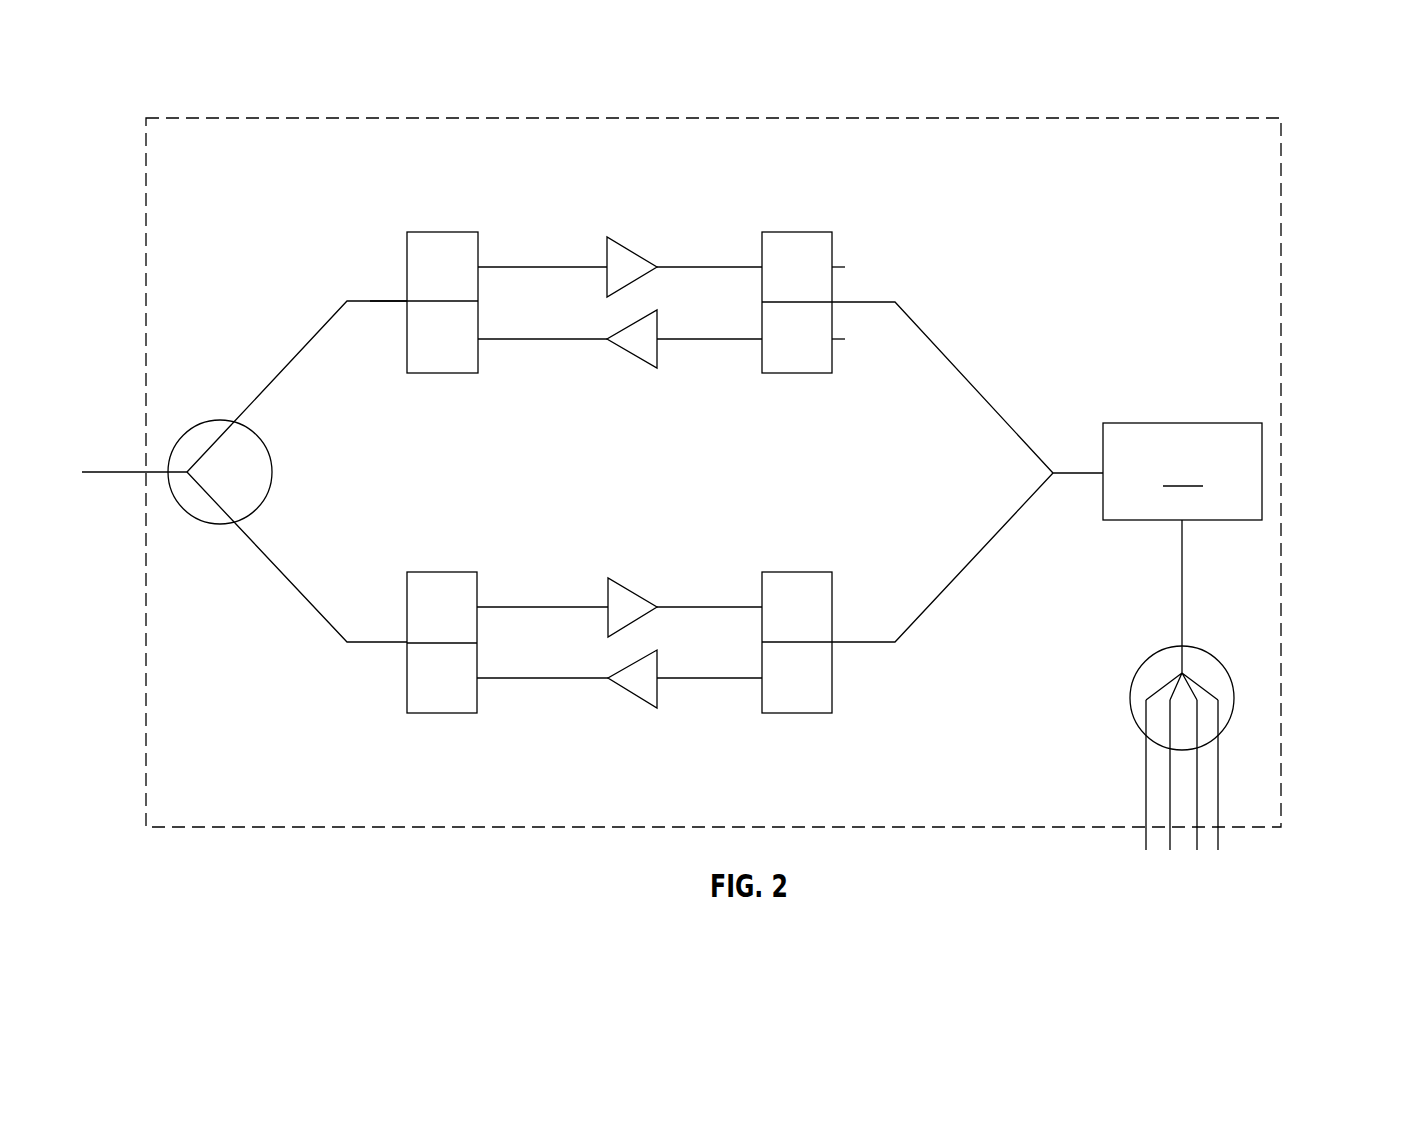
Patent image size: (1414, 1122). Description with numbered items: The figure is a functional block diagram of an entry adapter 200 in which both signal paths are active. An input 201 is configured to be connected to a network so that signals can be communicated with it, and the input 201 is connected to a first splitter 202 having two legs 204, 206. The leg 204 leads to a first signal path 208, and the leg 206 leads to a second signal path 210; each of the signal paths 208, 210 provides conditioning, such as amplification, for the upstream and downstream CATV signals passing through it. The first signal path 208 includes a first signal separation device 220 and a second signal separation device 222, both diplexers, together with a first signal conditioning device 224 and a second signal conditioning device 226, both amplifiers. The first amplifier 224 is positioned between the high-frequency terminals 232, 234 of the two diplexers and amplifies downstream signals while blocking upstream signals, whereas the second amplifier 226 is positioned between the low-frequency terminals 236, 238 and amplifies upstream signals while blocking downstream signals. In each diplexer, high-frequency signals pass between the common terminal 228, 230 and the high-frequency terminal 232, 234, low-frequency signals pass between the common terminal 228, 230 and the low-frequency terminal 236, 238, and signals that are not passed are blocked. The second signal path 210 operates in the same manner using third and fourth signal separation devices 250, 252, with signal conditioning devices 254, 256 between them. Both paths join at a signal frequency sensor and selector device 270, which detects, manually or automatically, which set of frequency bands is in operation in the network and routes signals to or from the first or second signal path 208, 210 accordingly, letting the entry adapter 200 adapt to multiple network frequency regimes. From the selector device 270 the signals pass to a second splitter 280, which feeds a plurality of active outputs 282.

The entry adapter 200 is at (1333, 83).
The input 201 is at (146, 474).
The first splitter 202 is at (222, 420).
The leg 204 is at (322, 330).
The leg 206 is at (317, 617).
The first signal path 208 is at (382, 182).
The second signal path 210 is at (380, 733).
The first signal separation device 220 is at (442, 232).
The second signal separation device 222 is at (795, 230).
The first signal conditioning device 224 is at (633, 250).
The second signal conditioning device 226 is at (630, 358).
The common terminal 228 is at (408, 300).
The common terminal 230 is at (832, 300).
The high-frequency terminal 232 is at (478, 255).
The high-frequency terminal 234 is at (832, 258).
The low-frequency terminal 236 is at (478, 330).
The low-frequency terminal 238 is at (832, 343).
The third signal separation device 250 is at (442, 572).
The fourth signal separation device 252 is at (795, 570).
The signal conditioning device 254 is at (632, 590).
The signal conditioning device 256 is at (633, 697).
The signal frequency sensor and selector device 270 is at (1182, 548).
The second splitter 280 is at (1211, 651).
The active outputs 282 is at (1218, 773).